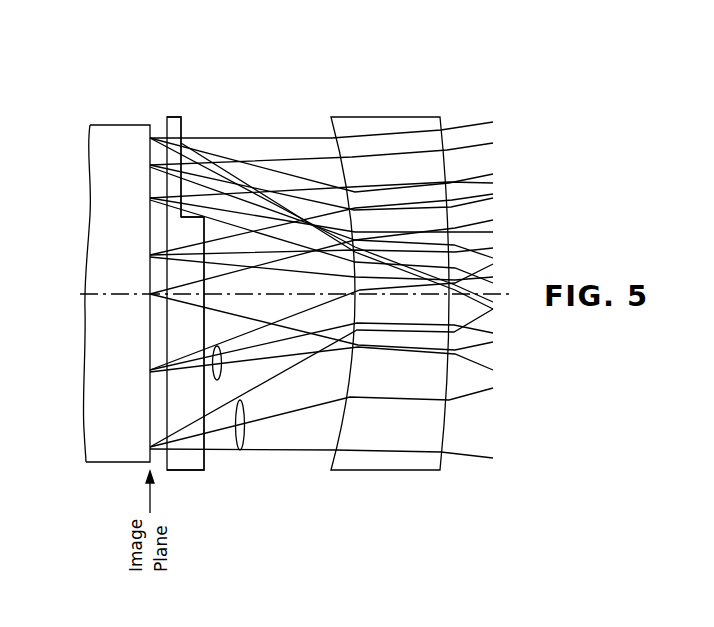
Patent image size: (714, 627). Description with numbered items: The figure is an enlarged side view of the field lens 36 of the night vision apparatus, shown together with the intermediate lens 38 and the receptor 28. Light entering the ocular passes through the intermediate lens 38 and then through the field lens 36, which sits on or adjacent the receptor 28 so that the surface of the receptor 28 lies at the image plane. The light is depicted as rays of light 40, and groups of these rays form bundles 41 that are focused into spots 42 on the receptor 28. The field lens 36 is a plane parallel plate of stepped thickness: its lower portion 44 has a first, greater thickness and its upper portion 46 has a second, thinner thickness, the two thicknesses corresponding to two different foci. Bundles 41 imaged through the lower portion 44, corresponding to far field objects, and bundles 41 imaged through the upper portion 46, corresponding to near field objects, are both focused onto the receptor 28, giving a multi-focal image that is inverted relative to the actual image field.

The receptor 28 is at (113, 229).
The field lens 36 is at (176, 116).
The intermediate lens 38 is at (359, 124).
The rays of light 40 is at (313, 180).
The bundles 41 is at (217, 380).
The spots 42 is at (150, 139).
The lower portion 44 is at (185, 462).
The upper portion 46 is at (175, 128).